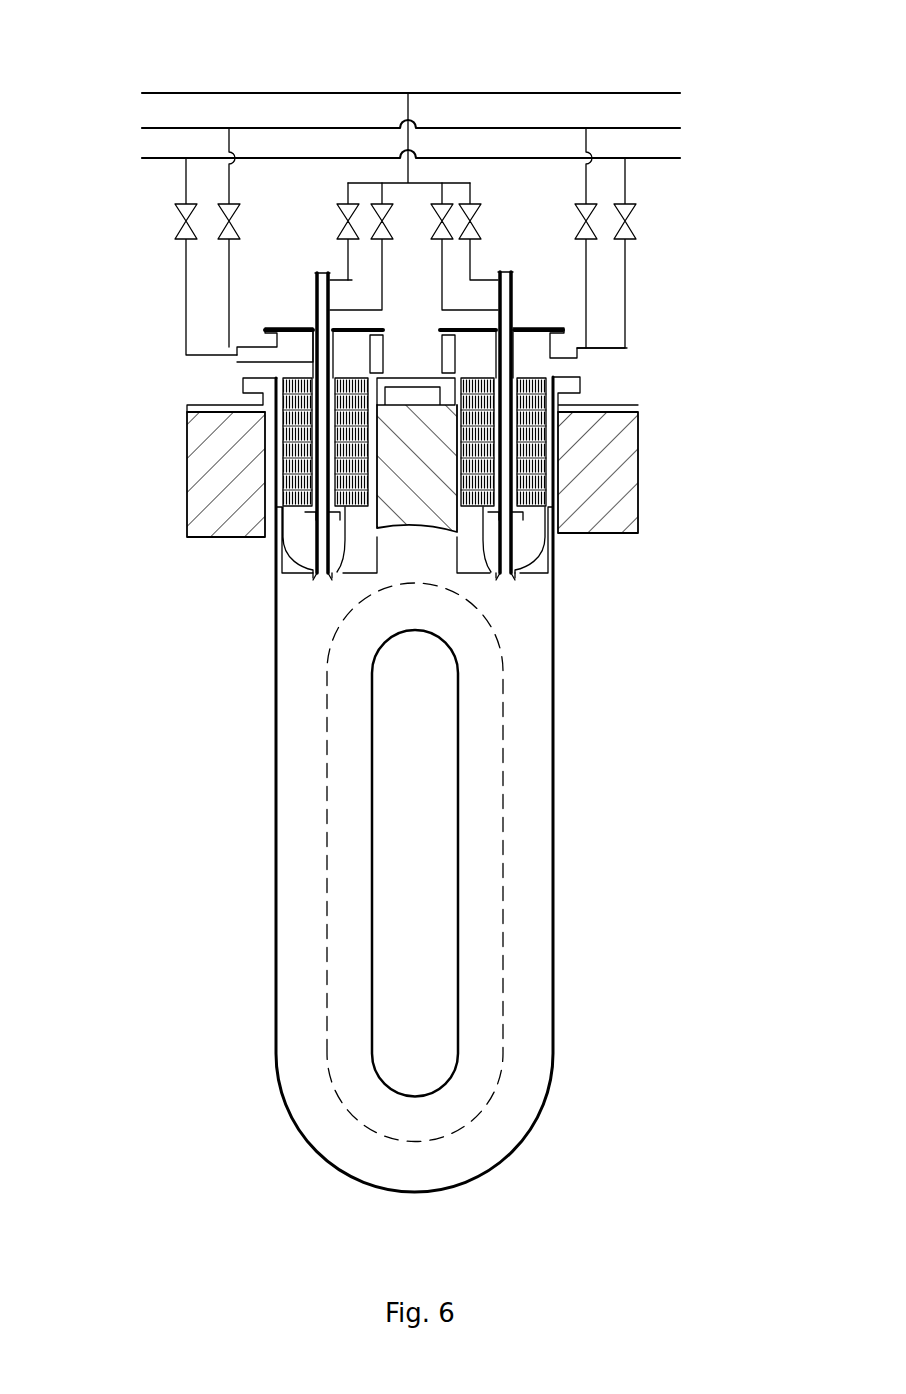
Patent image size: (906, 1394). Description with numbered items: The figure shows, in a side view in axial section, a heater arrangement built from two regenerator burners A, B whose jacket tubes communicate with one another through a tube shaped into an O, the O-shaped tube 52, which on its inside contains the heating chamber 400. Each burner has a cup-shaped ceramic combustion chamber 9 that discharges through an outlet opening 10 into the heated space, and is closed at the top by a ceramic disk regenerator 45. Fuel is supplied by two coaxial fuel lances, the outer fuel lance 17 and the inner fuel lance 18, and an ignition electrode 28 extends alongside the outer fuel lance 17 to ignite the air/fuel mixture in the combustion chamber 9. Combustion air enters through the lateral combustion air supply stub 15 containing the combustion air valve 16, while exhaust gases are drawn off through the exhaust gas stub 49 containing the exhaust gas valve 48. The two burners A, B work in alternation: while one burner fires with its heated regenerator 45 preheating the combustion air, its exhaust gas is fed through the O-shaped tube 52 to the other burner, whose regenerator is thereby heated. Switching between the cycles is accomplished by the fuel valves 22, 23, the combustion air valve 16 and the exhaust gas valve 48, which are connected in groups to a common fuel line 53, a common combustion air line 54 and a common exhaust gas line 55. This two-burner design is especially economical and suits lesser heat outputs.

The combustion chamber 9 is at (295, 547).
The outlet opening 10 is at (330, 578).
The combustion air supply stub 15 is at (511, 326).
The combustion air valve 16 is at (228, 242).
The outer fuel lance 17 is at (313, 359).
The inner fuel lance 18 is at (323, 275).
The fuel valve 22 is at (437, 218).
The fuel valve 23 is at (343, 220).
The ignition electrode 28 is at (503, 272).
The ceramic disk regenerator 45 is at (287, 468).
The exhaust gas valve 48 is at (180, 223).
The exhaust gas stub 49 is at (249, 347).
The O-shaped tube 52 is at (276, 905).
The common fuel line 53 is at (570, 92).
The common combustion air line 54 is at (647, 127).
The common exhaust gas line 55 is at (667, 160).
The heating chamber 400 is at (527, 887).
The regenerator burner A is at (264, 556).
The regenerator burner B is at (572, 555).